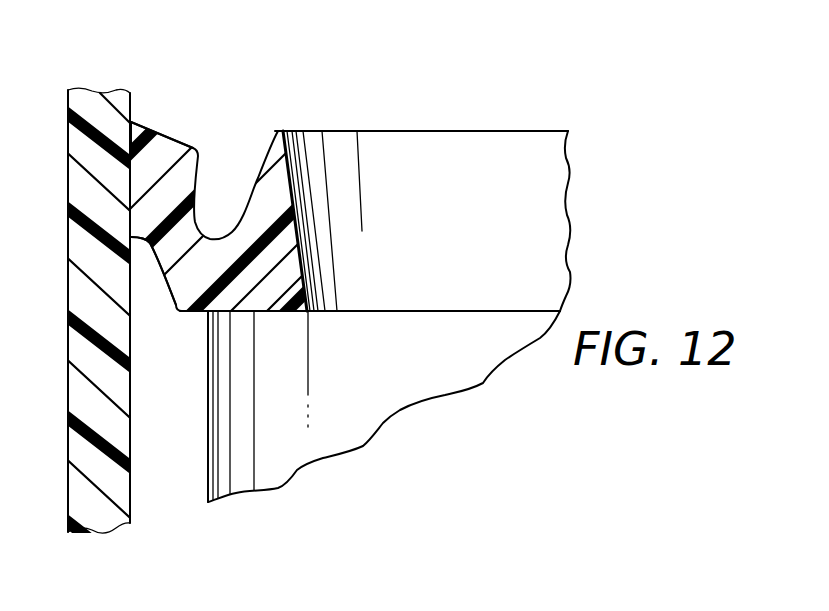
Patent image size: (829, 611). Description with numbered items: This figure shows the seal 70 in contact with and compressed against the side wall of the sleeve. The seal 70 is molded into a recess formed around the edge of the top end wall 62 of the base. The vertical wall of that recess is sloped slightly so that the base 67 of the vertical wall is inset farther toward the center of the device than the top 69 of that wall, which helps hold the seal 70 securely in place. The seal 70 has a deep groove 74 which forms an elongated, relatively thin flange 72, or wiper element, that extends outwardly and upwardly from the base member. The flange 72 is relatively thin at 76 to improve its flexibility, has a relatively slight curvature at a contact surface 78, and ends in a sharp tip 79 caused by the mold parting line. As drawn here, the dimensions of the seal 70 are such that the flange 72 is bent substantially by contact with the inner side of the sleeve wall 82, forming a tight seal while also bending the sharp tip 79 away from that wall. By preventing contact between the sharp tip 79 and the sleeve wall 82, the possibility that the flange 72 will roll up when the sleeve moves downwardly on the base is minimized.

The top end wall 62 is at (500, 131).
The base of the vertical wall 67 is at (307, 313).
The top of the vertical wall 69 is at (292, 135).
The seal 70 is at (253, 104).
The flange 72 is at (186, 130).
The groove 74 is at (217, 237).
The thin portion of the flange 76 is at (147, 234).
The contact surface 78 is at (140, 179).
The sharp tip 79 is at (135, 150).
The sleeve wall 82 is at (97, 477).